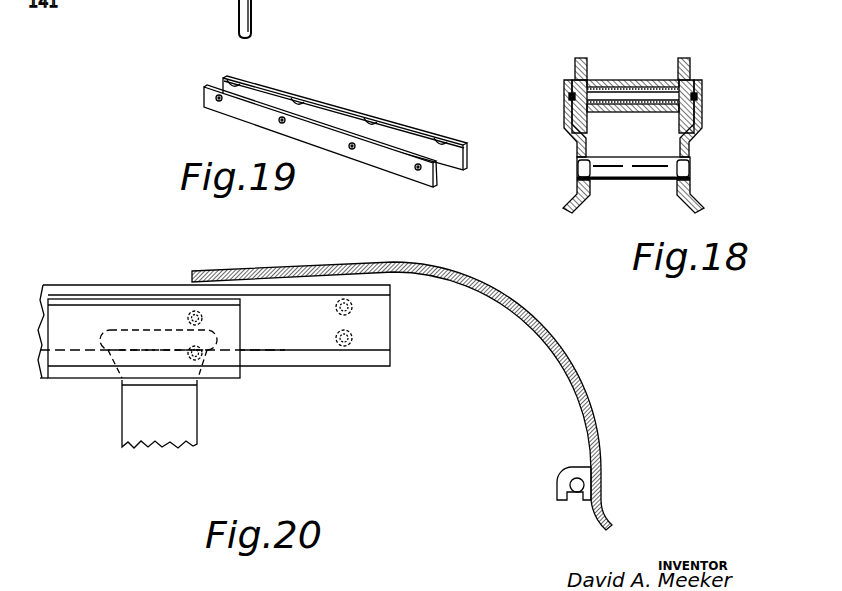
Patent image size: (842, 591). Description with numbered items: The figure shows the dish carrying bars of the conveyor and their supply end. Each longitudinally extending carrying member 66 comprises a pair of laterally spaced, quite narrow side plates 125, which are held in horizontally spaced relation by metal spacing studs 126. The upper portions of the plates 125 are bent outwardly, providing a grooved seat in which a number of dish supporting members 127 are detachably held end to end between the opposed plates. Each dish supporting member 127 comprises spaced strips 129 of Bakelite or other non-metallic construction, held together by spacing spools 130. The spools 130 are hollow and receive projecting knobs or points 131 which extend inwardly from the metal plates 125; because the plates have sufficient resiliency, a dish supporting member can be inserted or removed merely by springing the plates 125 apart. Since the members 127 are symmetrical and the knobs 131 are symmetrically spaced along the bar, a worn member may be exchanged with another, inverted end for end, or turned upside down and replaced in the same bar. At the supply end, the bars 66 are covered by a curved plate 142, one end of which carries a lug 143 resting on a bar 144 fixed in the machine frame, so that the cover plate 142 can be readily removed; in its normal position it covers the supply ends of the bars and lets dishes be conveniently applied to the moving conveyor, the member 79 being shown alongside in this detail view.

In FIG. 18, the carrying member 66 is at (700, 187).
In FIG. 20, the carrying member 66 is at (220, 372).
In FIG. 20, the bar 79 is at (305, 355).
In FIG. 18, the side plate 125 is at (578, 190).
In FIG. 18, the spacing stud 126 is at (615, 183).
In FIG. 19, the dish supporting member 127 is at (353, 115).
In FIG. 18, the strip 129 is at (592, 44).
In FIG. 19, the spacing spool 130 is at (241, 85).
In FIG. 18, the spacing spool 130 is at (646, 80).
In FIG. 18, the projecting knob 131 is at (568, 97).
In FIG. 20, the curved plate 142 is at (545, 343).
In FIG. 20, the lug 143 is at (565, 470).
In FIG. 20, the bar 144 is at (584, 485).